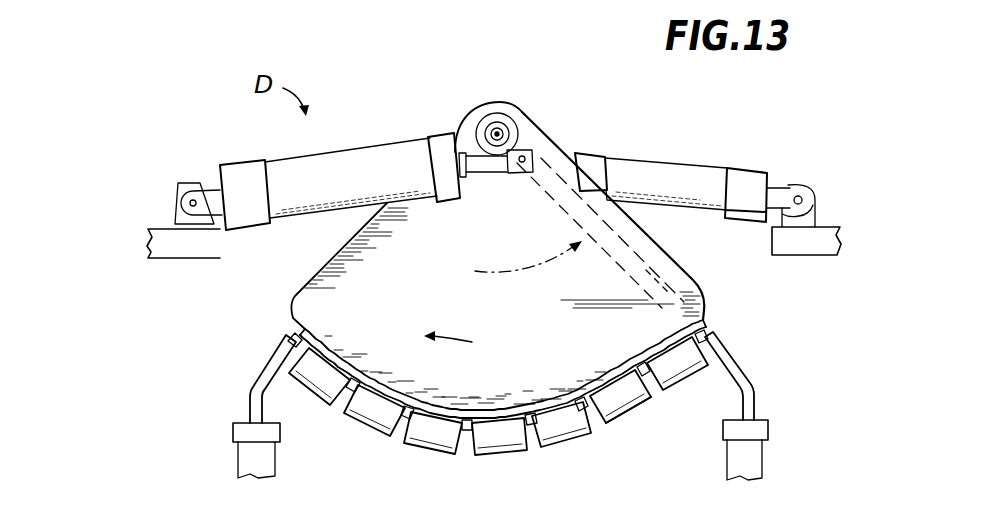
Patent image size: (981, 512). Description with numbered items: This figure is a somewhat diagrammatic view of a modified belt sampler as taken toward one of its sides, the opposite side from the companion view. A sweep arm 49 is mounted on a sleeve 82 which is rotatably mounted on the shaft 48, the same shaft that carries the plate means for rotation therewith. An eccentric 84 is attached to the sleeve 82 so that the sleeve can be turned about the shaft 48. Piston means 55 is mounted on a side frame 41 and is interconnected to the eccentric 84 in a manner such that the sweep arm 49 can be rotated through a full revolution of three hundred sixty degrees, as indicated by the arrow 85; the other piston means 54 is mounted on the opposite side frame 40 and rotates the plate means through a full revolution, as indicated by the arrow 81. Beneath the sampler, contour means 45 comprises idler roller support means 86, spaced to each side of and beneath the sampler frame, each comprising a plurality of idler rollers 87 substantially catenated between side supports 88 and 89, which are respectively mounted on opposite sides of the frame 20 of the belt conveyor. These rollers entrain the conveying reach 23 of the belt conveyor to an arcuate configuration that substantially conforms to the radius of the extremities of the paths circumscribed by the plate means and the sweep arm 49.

The frame 20 is at (247, 459).
The conveying reach 23 is at (548, 408).
The side frame 40 is at (830, 243).
The side frame 41 is at (186, 244).
The contour means 45 is at (498, 419).
The shaft 48 is at (524, 135).
The sweep arm 49 is at (668, 279).
The piston means 54 is at (705, 137).
The piston means 55 is at (366, 157).
The arrow 81 is at (500, 268).
The sleeve 82 is at (500, 128).
The eccentric 84 is at (482, 117).
The arrow 85 is at (458, 340).
The idler roller support means 86 is at (574, 452).
The idler rollers 87 is at (642, 430).
The side support 88 is at (751, 381).
The side support 89 is at (256, 385).